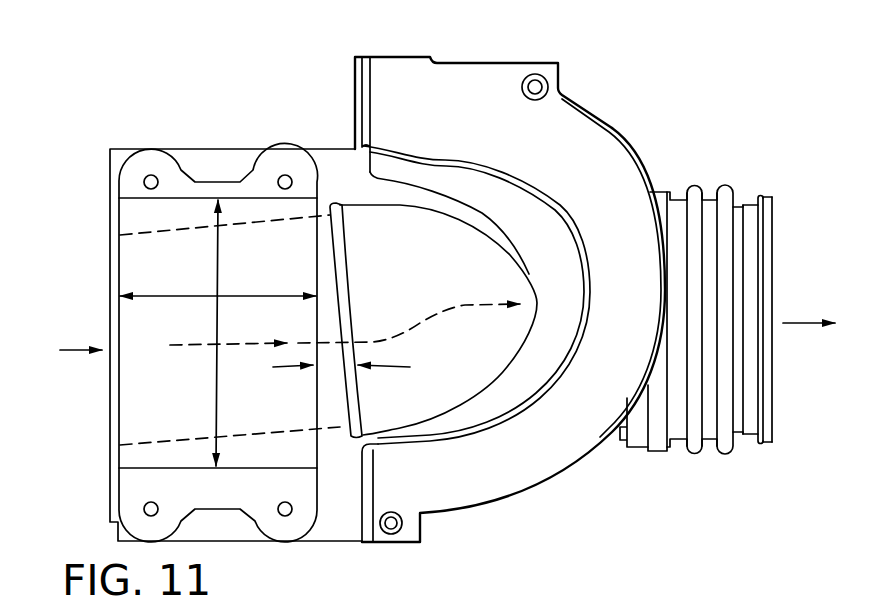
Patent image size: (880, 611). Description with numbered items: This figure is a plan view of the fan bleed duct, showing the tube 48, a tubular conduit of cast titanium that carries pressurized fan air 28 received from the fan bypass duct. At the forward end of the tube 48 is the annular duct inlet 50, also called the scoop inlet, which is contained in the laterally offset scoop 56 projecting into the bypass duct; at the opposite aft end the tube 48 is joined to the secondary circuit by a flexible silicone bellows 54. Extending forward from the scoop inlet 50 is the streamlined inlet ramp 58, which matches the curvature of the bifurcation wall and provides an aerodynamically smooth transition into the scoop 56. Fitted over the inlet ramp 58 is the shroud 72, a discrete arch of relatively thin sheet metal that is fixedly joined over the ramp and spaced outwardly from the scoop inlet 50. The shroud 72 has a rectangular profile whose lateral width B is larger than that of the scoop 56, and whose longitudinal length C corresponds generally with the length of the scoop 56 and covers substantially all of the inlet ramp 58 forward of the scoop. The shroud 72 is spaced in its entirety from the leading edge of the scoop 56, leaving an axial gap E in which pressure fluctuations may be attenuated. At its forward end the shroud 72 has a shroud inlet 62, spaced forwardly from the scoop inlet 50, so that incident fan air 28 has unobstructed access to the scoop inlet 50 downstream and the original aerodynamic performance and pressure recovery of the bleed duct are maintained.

The pressurized fan air 28 is at (67, 350).
The tube 48 is at (610, 440).
The duct inlet 50 is at (330, 273).
The flexible silicone bellows 54 is at (697, 183).
The scoop 56 is at (475, 287).
The inlet ramp 58 is at (208, 148).
The shroud inlet 62 is at (119, 268).
The shroud 72 is at (140, 401).
The longitudinal length C is at (243, 293).
The lateral width B is at (218, 398).
The axial gap E is at (390, 368).